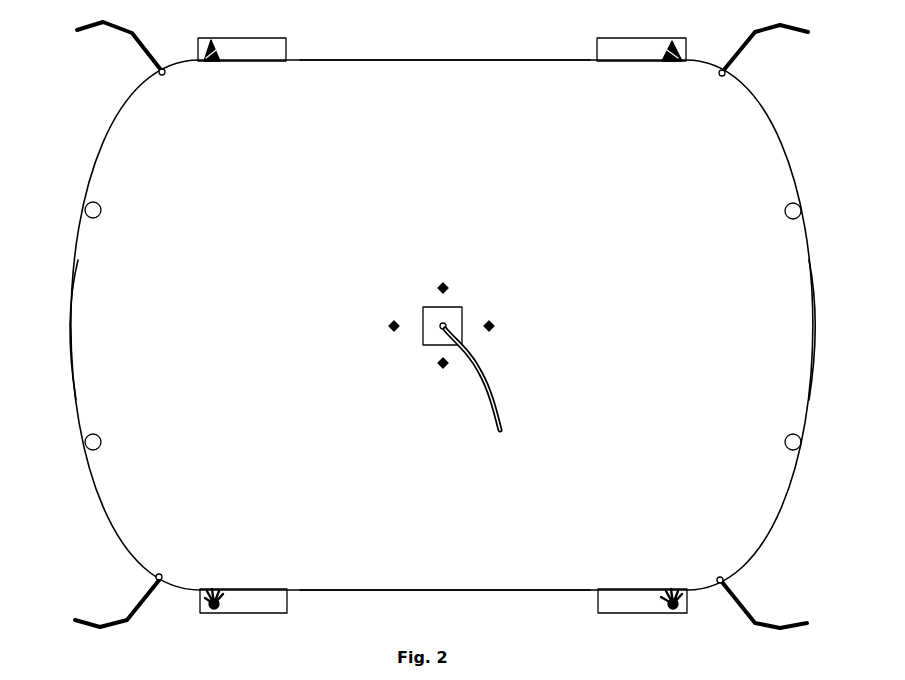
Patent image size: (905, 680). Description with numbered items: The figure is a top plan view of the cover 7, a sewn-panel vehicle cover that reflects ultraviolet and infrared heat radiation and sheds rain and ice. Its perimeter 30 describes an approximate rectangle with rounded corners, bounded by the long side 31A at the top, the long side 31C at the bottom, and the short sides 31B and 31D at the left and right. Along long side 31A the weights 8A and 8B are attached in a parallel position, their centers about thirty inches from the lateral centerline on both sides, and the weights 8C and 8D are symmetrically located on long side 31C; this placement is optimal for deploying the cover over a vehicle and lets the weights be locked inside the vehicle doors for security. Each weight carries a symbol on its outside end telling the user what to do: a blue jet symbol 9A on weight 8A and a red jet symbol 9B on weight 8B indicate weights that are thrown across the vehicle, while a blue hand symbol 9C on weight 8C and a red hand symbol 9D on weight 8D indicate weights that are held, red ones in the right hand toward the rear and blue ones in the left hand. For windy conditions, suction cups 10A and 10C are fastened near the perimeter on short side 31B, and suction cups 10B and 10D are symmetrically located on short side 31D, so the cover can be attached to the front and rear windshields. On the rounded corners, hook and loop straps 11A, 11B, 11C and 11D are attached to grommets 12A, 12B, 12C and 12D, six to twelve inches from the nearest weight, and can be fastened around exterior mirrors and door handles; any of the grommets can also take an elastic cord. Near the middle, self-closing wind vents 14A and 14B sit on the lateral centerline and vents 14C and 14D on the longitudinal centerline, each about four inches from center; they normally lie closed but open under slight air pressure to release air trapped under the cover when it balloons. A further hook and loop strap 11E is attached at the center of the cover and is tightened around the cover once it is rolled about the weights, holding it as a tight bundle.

The cover 7 is at (203, 157).
The perimeter 30 is at (767, 110).
The long side 31A is at (442, 60).
The short side 31B is at (72, 313).
The long side 31C is at (463, 590).
The short side 31D is at (815, 350).
The weight 8A is at (253, 45).
The weight 8B is at (641, 43).
The weight 8C is at (253, 608).
The weight 8D is at (640, 607).
The blue jet symbol 9A is at (208, 64).
The red jet symbol 9B is at (680, 64).
The blue hand symbol 9C is at (206, 588).
The red hand symbol 9D is at (677, 590).
The suction cup 10A is at (100, 214).
The suction cup 10B is at (784, 205).
The suction cup 10C is at (100, 449).
The suction cup 10D is at (783, 447).
The hook and loop strap 11A is at (148, 58).
The hook and loop strap 11B is at (743, 58).
The hook and loop strap 11C is at (152, 587).
The hook and loop strap 11D is at (737, 597).
The hook and loop strap 11E is at (485, 378).
The grommet 12A is at (163, 67).
The grommet 12B is at (721, 67).
The grommet 12C is at (160, 582).
The grommet 12D is at (723, 589).
The self-closing wind vent 14A is at (449, 289).
The self-closing wind vent 14B is at (447, 367).
The self-closing wind vent 14C is at (392, 331).
The self-closing wind vent 14D is at (495, 327).